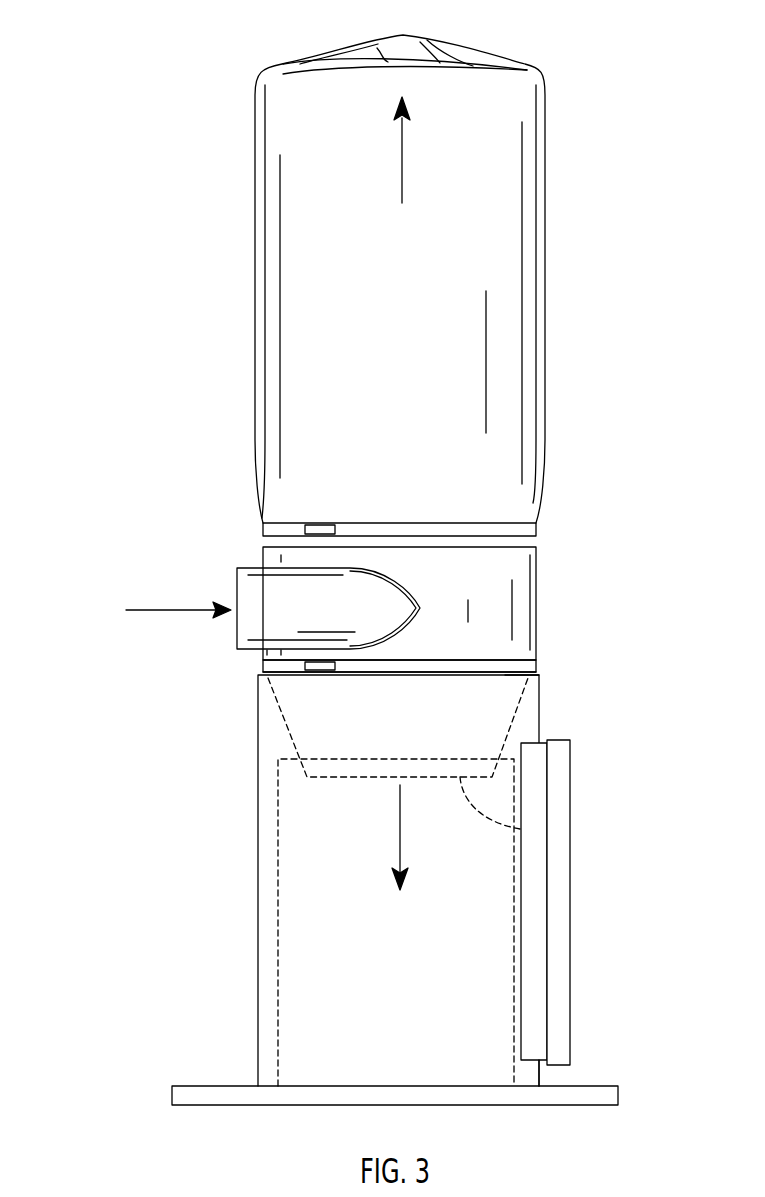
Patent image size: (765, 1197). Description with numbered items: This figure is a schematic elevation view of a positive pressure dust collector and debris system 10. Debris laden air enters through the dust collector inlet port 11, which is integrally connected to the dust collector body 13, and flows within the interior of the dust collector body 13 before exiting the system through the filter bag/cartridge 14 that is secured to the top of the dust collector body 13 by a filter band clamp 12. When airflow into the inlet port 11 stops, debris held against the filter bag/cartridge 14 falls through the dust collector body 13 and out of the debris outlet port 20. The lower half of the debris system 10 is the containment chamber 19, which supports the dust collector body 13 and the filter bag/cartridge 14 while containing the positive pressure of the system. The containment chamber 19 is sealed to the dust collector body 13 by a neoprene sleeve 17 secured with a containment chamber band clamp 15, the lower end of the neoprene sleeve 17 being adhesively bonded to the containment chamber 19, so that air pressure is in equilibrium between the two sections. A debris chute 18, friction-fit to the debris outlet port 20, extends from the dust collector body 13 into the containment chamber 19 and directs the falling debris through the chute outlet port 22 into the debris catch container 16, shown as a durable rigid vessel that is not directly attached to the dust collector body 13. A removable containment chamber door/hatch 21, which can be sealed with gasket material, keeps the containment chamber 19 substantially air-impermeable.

The positive pressure dust collector and debris system 10 is at (129, 37).
The dust collector inlet port 11 is at (275, 570).
The filter band clamp 12 is at (300, 523).
The dust collector body 13 is at (537, 603).
The filter bag/cartridge 14 is at (287, 232).
The containment chamber band clamp 15 is at (263, 666).
The debris catch container 16 is at (278, 933).
The neoprene sleeve 17 is at (537, 665).
The debris chute 18 is at (518, 720).
The containment chamber 19 is at (258, 757).
The debris outlet port 20 is at (505, 675).
The removable containment chamber door/hatch 21 is at (570, 935).
The chute outlet port 22 is at (520, 829).